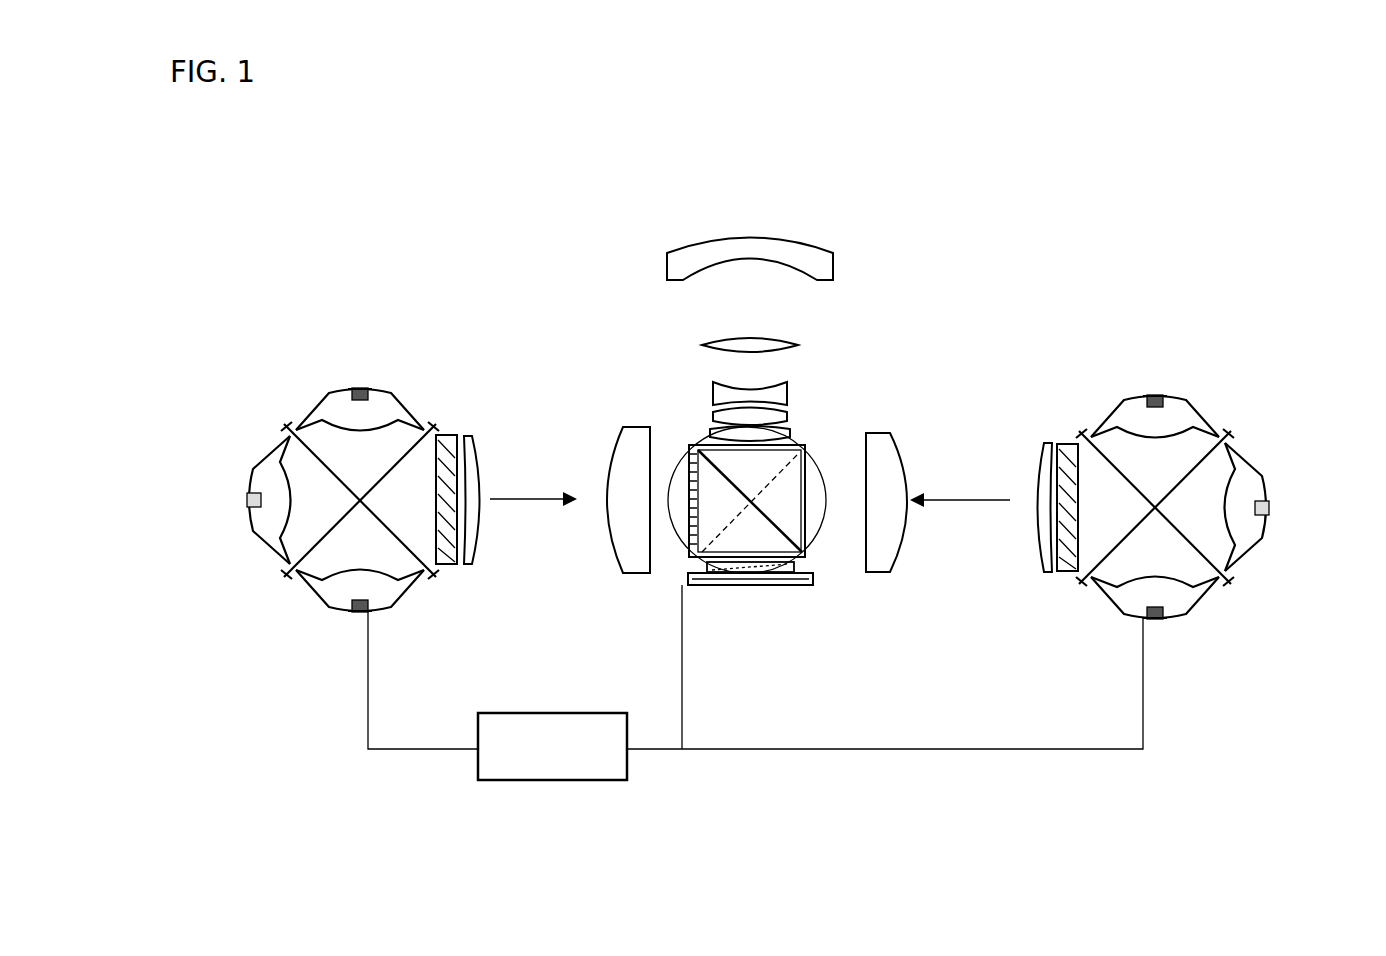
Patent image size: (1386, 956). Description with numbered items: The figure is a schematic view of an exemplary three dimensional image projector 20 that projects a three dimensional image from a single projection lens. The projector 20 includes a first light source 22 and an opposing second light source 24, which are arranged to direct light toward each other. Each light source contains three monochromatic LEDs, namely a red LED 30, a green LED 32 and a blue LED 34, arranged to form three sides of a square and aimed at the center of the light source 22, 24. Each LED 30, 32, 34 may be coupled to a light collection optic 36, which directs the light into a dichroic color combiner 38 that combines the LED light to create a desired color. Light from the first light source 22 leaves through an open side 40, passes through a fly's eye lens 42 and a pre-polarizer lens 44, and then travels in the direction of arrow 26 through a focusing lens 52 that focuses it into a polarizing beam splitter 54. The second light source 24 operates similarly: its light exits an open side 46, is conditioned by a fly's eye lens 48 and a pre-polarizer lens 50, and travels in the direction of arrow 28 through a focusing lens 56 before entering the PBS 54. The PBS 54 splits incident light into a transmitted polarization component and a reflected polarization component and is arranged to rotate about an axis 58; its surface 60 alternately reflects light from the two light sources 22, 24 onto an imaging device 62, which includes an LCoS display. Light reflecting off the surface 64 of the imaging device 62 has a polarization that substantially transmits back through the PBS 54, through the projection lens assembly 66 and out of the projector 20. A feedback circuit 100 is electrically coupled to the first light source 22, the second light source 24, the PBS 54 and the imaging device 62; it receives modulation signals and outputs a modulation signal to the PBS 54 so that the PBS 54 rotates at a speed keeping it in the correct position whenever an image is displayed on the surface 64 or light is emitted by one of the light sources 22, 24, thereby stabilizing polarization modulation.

The projector 20 is at (1047, 230).
The first light source 22 is at (260, 633).
The second light source 24 is at (1234, 354).
The arrow 26 is at (528, 499).
The arrow 28 is at (970, 500).
The red LED 30 is at (359, 388).
The green LED 32 is at (253, 494).
The blue LED 34 is at (357, 613).
The light collection optic 36 is at (393, 398).
The dichroic color combiner 38 is at (312, 455).
The open side 40 is at (440, 580).
The fly's eye lens 42 is at (447, 436).
The pre-polarizer lens 44 is at (476, 558).
The open side 46 is at (1077, 588).
The fly's eye lens 48 is at (1068, 444).
The pre-polarizer lens 50 is at (1044, 455).
The focusing lens 52 is at (621, 572).
The polarizing beam splitter 54 is at (827, 431).
The focusing lens 56 is at (887, 583).
The axis 58 is at (750, 502).
The surface 60 is at (786, 548).
The imaging device 62 is at (800, 585).
The surface 64 is at (703, 565).
The projection lens assembly 66 is at (849, 302).
The feedback circuit 100 is at (497, 781).